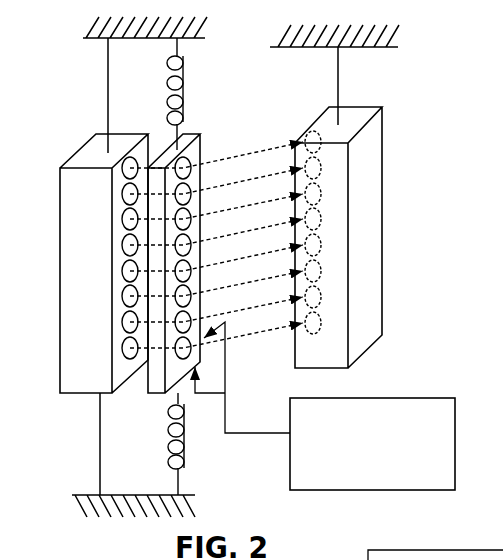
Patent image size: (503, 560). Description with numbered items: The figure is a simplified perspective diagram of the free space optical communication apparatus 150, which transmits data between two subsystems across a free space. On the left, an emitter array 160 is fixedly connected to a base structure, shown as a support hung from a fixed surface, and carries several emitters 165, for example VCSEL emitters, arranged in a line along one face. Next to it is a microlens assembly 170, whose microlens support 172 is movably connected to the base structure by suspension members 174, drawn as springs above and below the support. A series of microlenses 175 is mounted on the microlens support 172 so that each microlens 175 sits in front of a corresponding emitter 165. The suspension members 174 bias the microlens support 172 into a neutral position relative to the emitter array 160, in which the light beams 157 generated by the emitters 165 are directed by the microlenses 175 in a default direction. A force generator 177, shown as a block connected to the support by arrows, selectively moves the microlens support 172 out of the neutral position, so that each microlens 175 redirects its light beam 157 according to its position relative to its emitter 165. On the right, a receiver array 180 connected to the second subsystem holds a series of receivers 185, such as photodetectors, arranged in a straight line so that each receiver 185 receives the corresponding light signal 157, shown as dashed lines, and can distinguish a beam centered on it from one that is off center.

The free space optical communication apparatus 150 is at (418, 164).
The light signals 157 is at (265, 171).
The emitter array 160 is at (102, 150).
The emitters 165 is at (123, 355).
The microlens assembly 170 is at (158, 115).
The microlens support 172 is at (197, 133).
The suspension members 174 is at (185, 94).
The microlenses 175 is at (177, 355).
The force generator 177 is at (354, 483).
The receiver array 180 is at (356, 106).
The receivers 185 is at (312, 333).